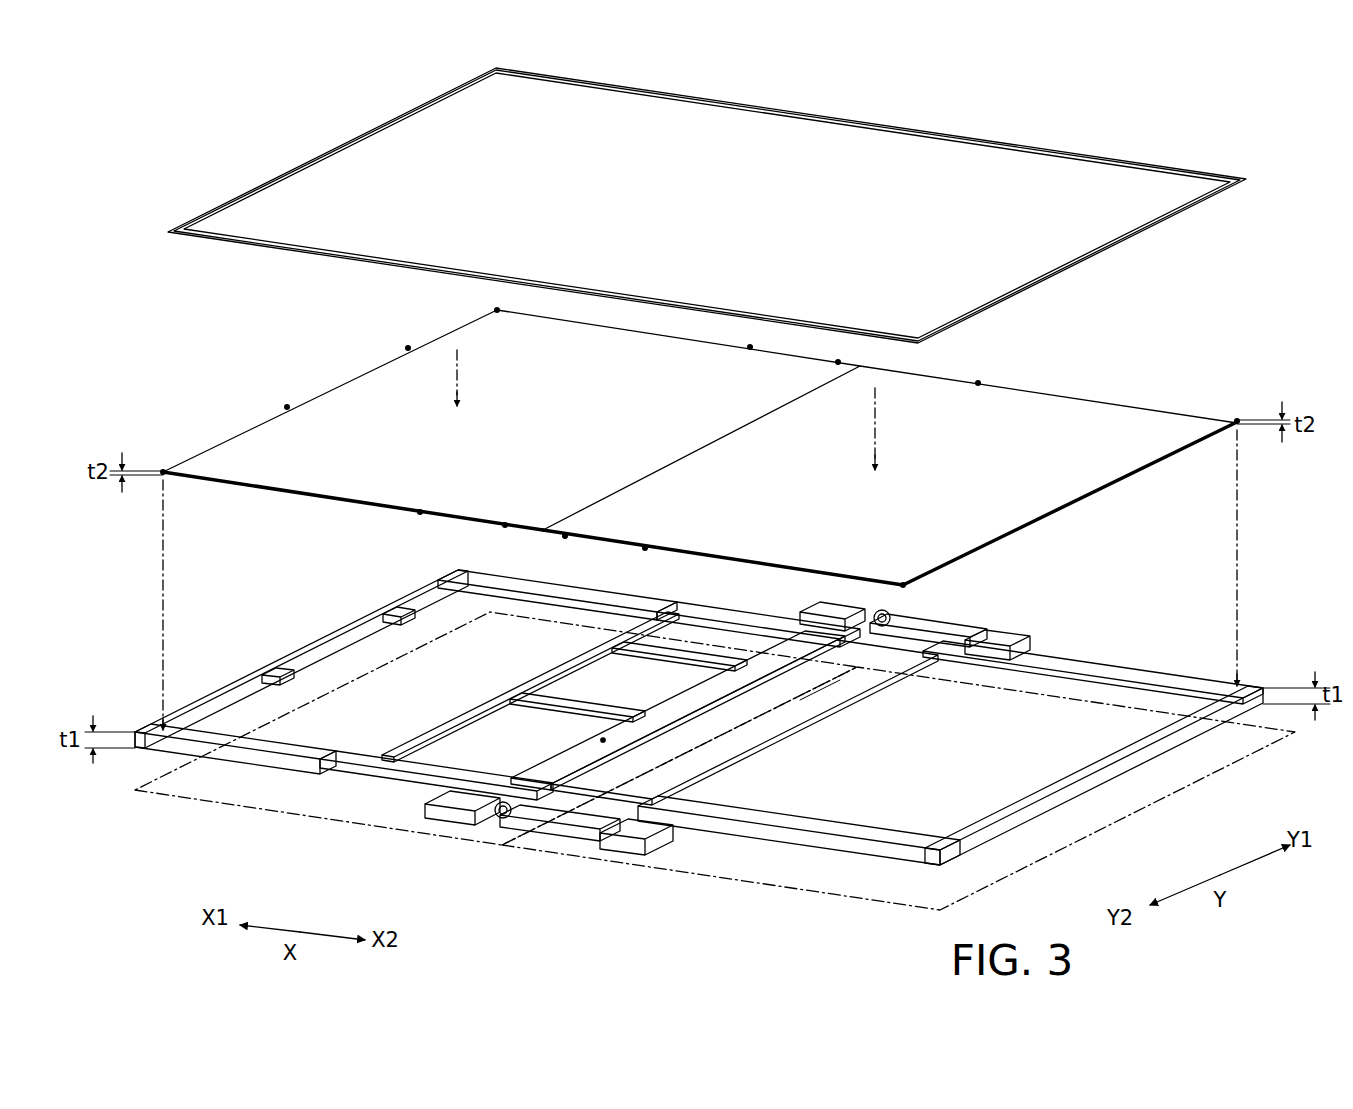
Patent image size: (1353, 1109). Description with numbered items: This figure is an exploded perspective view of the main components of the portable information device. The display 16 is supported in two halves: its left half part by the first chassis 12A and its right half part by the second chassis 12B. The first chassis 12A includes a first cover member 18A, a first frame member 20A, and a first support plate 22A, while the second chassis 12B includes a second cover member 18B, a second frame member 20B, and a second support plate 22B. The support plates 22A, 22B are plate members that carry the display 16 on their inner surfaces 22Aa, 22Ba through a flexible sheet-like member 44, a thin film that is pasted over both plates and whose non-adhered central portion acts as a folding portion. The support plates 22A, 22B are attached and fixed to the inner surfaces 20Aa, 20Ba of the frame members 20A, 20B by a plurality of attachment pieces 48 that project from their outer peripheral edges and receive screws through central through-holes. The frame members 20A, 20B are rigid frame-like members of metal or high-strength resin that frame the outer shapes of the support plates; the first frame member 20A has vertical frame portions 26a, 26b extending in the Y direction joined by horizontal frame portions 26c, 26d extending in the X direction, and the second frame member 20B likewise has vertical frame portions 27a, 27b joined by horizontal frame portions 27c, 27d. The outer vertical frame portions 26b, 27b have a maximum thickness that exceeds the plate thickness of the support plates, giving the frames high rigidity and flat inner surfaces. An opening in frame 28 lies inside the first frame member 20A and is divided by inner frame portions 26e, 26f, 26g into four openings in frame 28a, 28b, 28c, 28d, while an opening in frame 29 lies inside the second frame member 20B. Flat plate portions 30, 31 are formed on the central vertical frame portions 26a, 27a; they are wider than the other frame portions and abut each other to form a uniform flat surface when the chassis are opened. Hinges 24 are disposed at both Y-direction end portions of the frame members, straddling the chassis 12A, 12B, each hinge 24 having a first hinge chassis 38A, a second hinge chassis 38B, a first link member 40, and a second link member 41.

The display 16 is at (1057, 195).
The sheet-like member 44 is at (1065, 278).
The attachment pieces 48 is at (497, 310).
The first support plate 22A is at (275, 500).
The second support plate 22B is at (1110, 400).
The inner surface of first support plate 22Aa is at (365, 405).
The inner surface of second support plate 22Ba is at (1060, 470).
The first frame member 20A is at (280, 772).
The second frame member 20B is at (830, 850).
The inner surface of first frame member 20Aa is at (580, 592).
The inner surface of second frame member 20Ba is at (1165, 674).
The first chassis 12A is at (235, 797).
The second chassis 12B is at (855, 880).
The first cover member 18A is at (320, 830).
The second cover member 18B is at (649, 878).
The hinge 24 is at (540, 830).
The vertical frame portion 26a is at (670, 705).
The vertical frame portion 26b is at (330, 627).
The horizontal frame portion 26c is at (634, 597).
The horizontal frame portion 26d is at (297, 752).
The inner frame portion 26e is at (437, 735).
The inner frame portion 26f is at (720, 657).
The inner frame portion 26g is at (560, 692).
The vertical frame portion 27a is at (775, 722).
The vertical frame portion 27b is at (1098, 770).
The horizontal frame portion 27c is at (1040, 656).
The horizontal frame portion 27d is at (860, 827).
The opening in frame 28 is at (368, 652).
The opening in frame 28a is at (440, 610).
The opening in frame 28b is at (707, 650).
The opening in frame 28c is at (577, 683).
The opening in frame 28d is at (487, 723).
The opening in frame 29 is at (1000, 795).
The flat plate portion 30 is at (600, 740).
The flat plate portion 31 is at (845, 690).
The first hinge chassis 38A is at (445, 817).
The second hinge chassis 38B is at (600, 834).
The first link member 40 is at (506, 802).
The second link member 41 is at (500, 822).